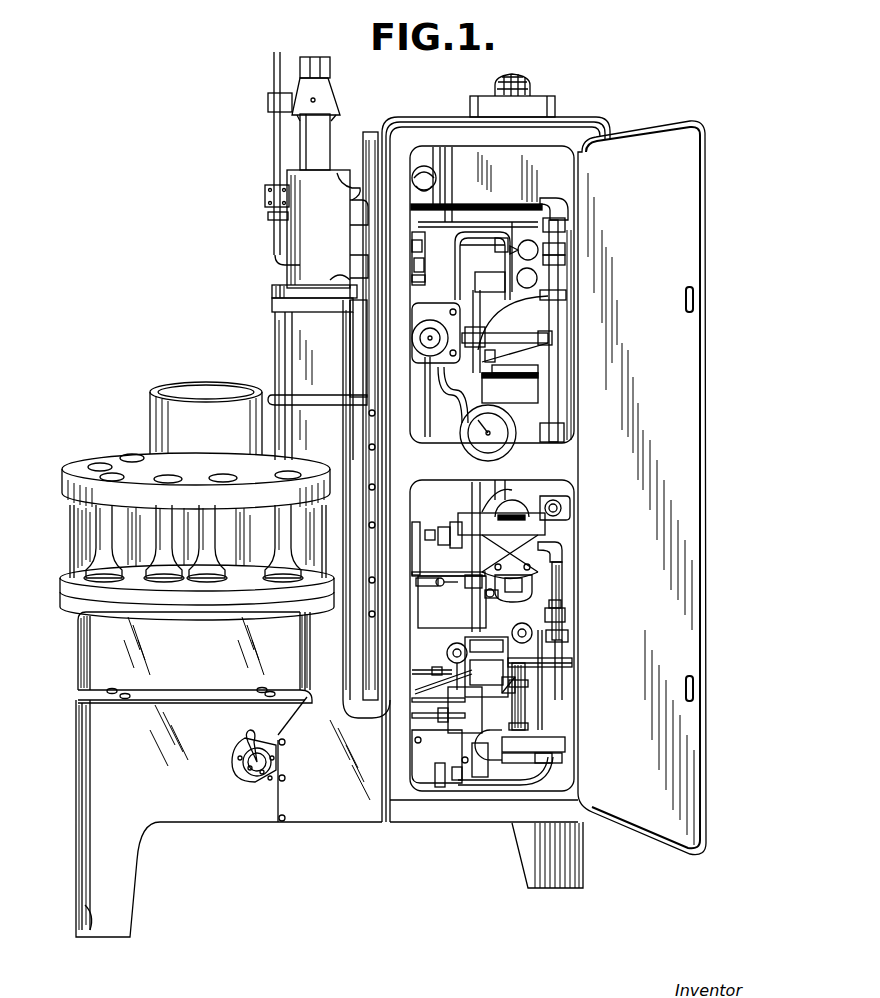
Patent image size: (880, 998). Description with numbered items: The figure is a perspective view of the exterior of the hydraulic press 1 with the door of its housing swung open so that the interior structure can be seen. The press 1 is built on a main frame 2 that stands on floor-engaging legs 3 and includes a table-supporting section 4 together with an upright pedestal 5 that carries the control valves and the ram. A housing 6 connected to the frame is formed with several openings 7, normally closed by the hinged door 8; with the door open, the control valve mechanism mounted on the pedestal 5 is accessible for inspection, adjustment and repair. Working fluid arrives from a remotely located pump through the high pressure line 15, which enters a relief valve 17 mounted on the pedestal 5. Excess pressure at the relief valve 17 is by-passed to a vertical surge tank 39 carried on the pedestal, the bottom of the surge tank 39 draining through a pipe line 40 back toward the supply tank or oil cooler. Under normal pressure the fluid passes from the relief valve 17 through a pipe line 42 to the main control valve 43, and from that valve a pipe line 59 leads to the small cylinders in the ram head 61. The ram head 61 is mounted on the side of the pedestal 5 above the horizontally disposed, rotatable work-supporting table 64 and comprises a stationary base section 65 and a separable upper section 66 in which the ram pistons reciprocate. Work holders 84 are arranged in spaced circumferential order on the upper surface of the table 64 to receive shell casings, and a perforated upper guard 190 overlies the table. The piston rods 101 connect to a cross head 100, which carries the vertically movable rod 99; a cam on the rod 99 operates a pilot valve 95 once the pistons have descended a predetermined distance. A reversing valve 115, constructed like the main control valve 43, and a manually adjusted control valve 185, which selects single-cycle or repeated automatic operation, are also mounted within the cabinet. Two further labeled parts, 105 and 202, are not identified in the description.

The hydraulic press 1 is at (605, 112).
The main frame 2 is at (213, 803).
The floor-engaging legs 3 is at (537, 860).
The table-supporting section 4 is at (195, 657).
The pedestal 5 is at (373, 340).
The housing 6 is at (428, 133).
The openings 7 is at (516, 432).
The hinged door 8 is at (705, 278).
The high pressure line 15 is at (572, 662).
The relief valve 17 is at (565, 622).
The surge tank 39 is at (540, 108).
The pipe line 40 is at (550, 738).
The pipe line 42 is at (563, 598).
The main control valve 43 is at (566, 508).
The pipe line 59 is at (560, 350).
The ram head 61 is at (287, 334).
The work-supporting table 64 is at (60, 578).
The stationary base section 65 is at (276, 307).
The separable upper section 66 is at (327, 229).
The work holders 84 is at (98, 523).
The pilot valve 95 is at (266, 195).
The vertically movable rod 99 is at (276, 152).
The cross head 100 is at (312, 94).
The piston rods 101 is at (330, 134).
The bar 105 is at (432, 215).
The reversing valve 115 is at (538, 582).
The manually adjusted control valve 185 is at (240, 770).
The perforated upper guard 190 is at (78, 470).
The holes 202 is at (124, 456).